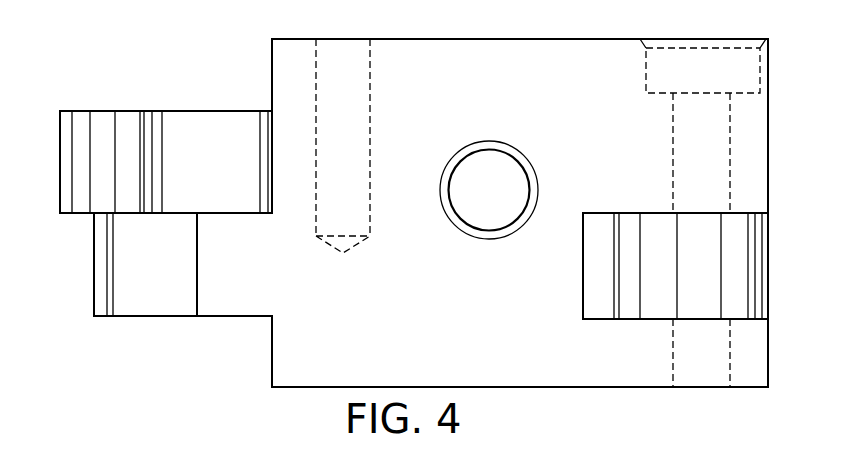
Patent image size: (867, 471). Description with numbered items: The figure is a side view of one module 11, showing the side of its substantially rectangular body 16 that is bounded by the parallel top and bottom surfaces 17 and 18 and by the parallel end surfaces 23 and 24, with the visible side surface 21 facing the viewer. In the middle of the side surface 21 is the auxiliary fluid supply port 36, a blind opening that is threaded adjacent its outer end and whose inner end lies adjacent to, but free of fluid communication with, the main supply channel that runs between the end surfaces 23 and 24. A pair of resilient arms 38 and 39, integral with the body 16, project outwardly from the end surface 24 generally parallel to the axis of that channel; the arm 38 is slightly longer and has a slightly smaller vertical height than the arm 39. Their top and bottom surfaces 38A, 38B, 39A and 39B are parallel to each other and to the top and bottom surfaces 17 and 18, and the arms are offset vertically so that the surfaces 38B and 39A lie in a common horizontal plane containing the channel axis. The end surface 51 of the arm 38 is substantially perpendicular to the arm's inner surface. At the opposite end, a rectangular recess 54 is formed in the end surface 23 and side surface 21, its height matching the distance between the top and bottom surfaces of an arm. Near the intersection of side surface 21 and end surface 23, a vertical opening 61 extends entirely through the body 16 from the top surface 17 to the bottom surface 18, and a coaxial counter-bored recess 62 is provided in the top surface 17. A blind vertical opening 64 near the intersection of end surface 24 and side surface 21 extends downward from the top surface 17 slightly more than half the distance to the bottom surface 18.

The module 11 is at (627, 396).
The body 16 is at (283, 388).
The top surface 17 is at (538, 39).
The bottom surface 18 is at (540, 388).
The side surface 21 is at (414, 213).
The end surface 23 is at (768, 125).
The end surface 24 is at (270, 77).
The auxiliary fluid supply port 36 is at (527, 183).
The resilient arm 38 is at (190, 130).
The top surface of arm 38A is at (157, 111).
The bottom surface of arm 38B is at (83, 215).
The resilient arm 39 is at (155, 297).
The top surface of arm 39A is at (237, 212).
The bottom surface of arm 39B is at (212, 318).
The end surface of arm 51 is at (60, 165).
The recess 54 is at (737, 214).
The vertical opening 61 is at (730, 170).
The counter-bored recess 62 is at (762, 72).
The vertical opening 64 is at (316, 80).